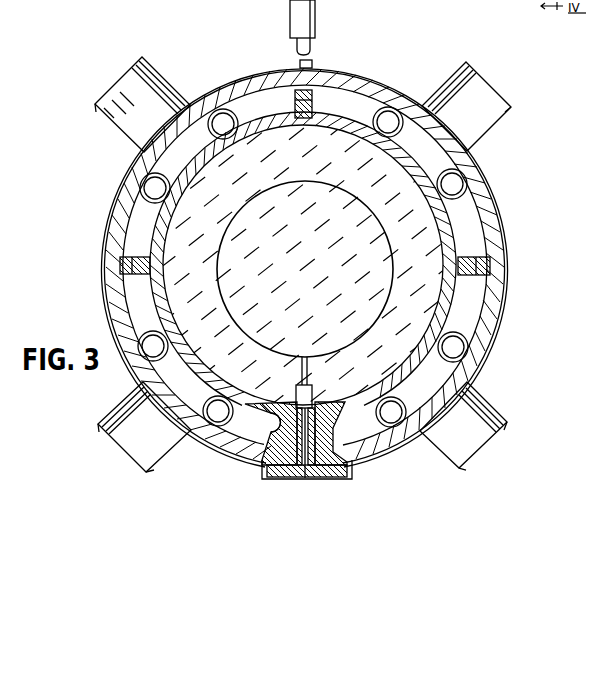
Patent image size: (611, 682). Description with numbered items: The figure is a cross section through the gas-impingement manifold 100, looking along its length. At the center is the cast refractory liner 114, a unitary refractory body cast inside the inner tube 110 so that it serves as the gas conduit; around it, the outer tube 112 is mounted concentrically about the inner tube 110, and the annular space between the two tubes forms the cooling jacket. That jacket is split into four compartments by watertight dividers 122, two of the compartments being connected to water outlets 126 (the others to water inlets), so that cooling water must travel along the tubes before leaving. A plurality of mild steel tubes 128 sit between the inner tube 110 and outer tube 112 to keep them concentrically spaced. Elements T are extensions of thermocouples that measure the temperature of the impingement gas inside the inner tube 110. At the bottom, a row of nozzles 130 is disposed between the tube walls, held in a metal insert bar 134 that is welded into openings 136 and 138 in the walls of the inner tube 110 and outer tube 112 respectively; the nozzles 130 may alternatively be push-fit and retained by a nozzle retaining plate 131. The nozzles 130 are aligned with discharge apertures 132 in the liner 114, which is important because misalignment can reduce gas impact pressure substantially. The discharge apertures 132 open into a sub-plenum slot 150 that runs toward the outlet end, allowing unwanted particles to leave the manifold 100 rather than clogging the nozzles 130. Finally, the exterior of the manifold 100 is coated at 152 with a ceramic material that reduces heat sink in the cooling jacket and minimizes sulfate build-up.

The gas-impingement manifold 100 is at (537, 137).
The inner tube 110 is at (450, 213).
The outer tube 112 is at (498, 232).
The cast refractory liner 114 is at (396, 282).
The dividers 122 is at (308, 100).
The water outlets 126 is at (181, 91).
The mild steel tubes 128 is at (140, 186).
The nozzles 130 is at (315, 446).
The nozzle retaining plate 131 is at (348, 471).
The discharge apertures 132 is at (302, 362).
The metal insert bar 134 is at (272, 455).
The opening in inner tube 136 is at (245, 400).
The opening in outer tube 138 is at (262, 448).
The sub-plenum slot 150 is at (312, 398).
The ceramic coating 152 is at (485, 362).
The thermocouple extensions T is at (290, 30).